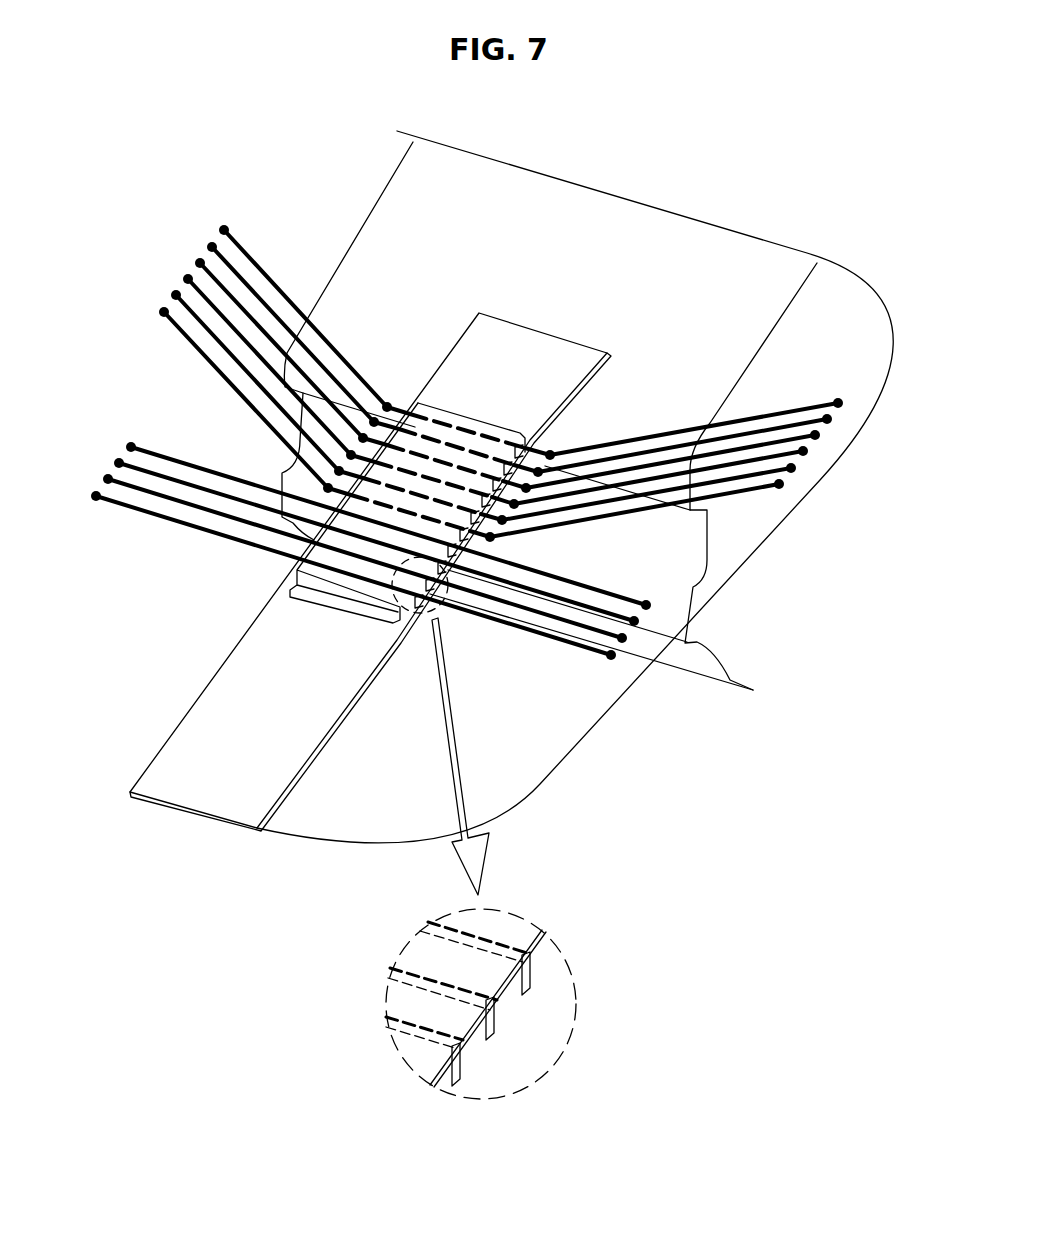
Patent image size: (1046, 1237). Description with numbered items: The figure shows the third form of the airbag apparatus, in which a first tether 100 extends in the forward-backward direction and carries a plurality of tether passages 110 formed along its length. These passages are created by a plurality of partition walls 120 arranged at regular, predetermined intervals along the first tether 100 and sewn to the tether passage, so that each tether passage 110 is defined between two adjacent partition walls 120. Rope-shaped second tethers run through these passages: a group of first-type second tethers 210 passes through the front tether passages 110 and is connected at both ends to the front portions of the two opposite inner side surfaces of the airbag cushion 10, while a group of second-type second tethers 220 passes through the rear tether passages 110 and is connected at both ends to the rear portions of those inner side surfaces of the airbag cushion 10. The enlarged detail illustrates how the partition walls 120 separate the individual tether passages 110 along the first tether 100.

The airbag cushion 10 is at (605, 742).
The first tether 100 is at (220, 792).
The tether passages 110 is at (477, 1050).
The partition walls 120 is at (530, 975).
The 2-1st tether 210 is at (717, 452).
The 2-2nd tether 220 is at (230, 542).